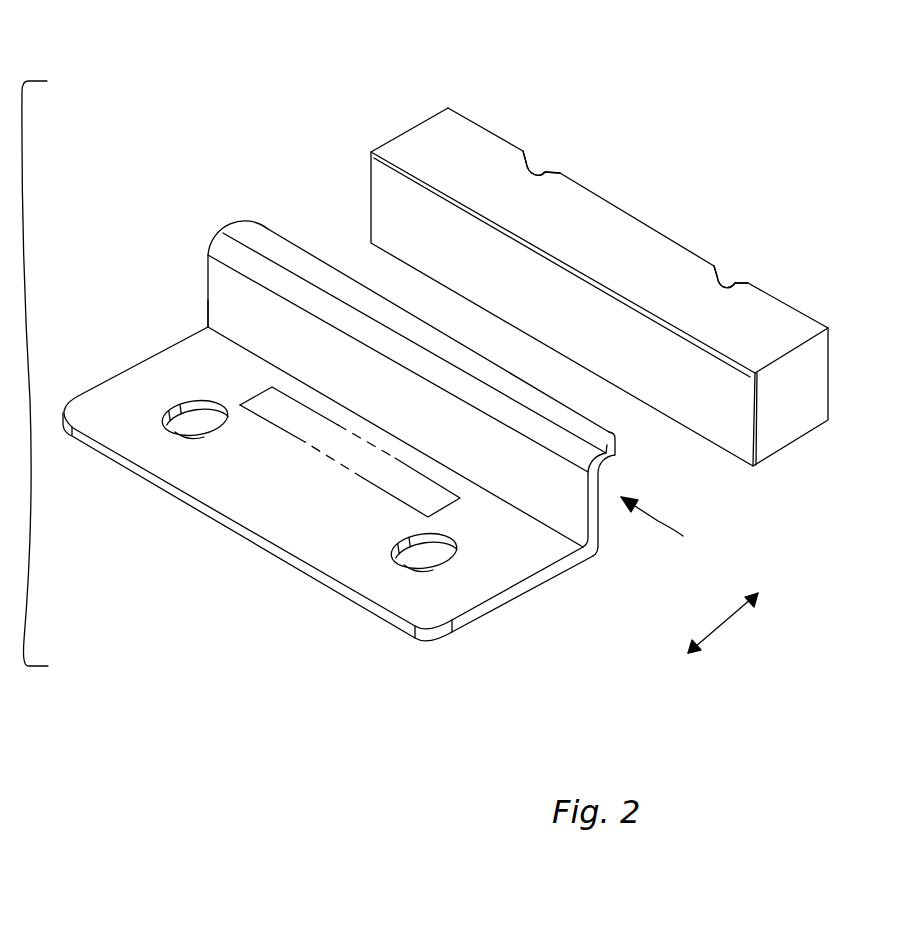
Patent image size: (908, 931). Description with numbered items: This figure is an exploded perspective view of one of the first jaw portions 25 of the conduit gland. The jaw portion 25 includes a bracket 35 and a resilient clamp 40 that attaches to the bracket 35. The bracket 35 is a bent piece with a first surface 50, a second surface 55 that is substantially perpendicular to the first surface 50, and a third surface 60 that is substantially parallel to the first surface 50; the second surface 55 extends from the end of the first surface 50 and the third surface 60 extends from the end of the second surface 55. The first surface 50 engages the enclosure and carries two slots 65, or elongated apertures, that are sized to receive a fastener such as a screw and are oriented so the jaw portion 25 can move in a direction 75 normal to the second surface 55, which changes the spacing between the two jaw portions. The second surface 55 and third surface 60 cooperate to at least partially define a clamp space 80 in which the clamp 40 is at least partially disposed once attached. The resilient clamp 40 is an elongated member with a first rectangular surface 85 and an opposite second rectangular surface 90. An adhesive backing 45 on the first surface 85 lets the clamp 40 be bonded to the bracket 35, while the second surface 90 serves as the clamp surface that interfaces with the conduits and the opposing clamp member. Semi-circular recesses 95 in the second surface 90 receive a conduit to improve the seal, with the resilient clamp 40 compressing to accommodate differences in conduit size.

The first jaw portion 25 is at (652, 72).
The bracket 35 is at (339, 436).
The resilient clamp 40 is at (635, 323).
The adhesive backing 45 is at (738, 433).
The first surface 50 is at (317, 537).
The second surface 55 is at (223, 302).
The third surface 60 is at (267, 240).
The slots 65 is at (192, 430).
The direction 75 is at (727, 627).
The clamp space 80 is at (675, 531).
The first surface 85 is at (633, 297).
The second surface 90 is at (790, 303).
The recesses 95 is at (542, 172).